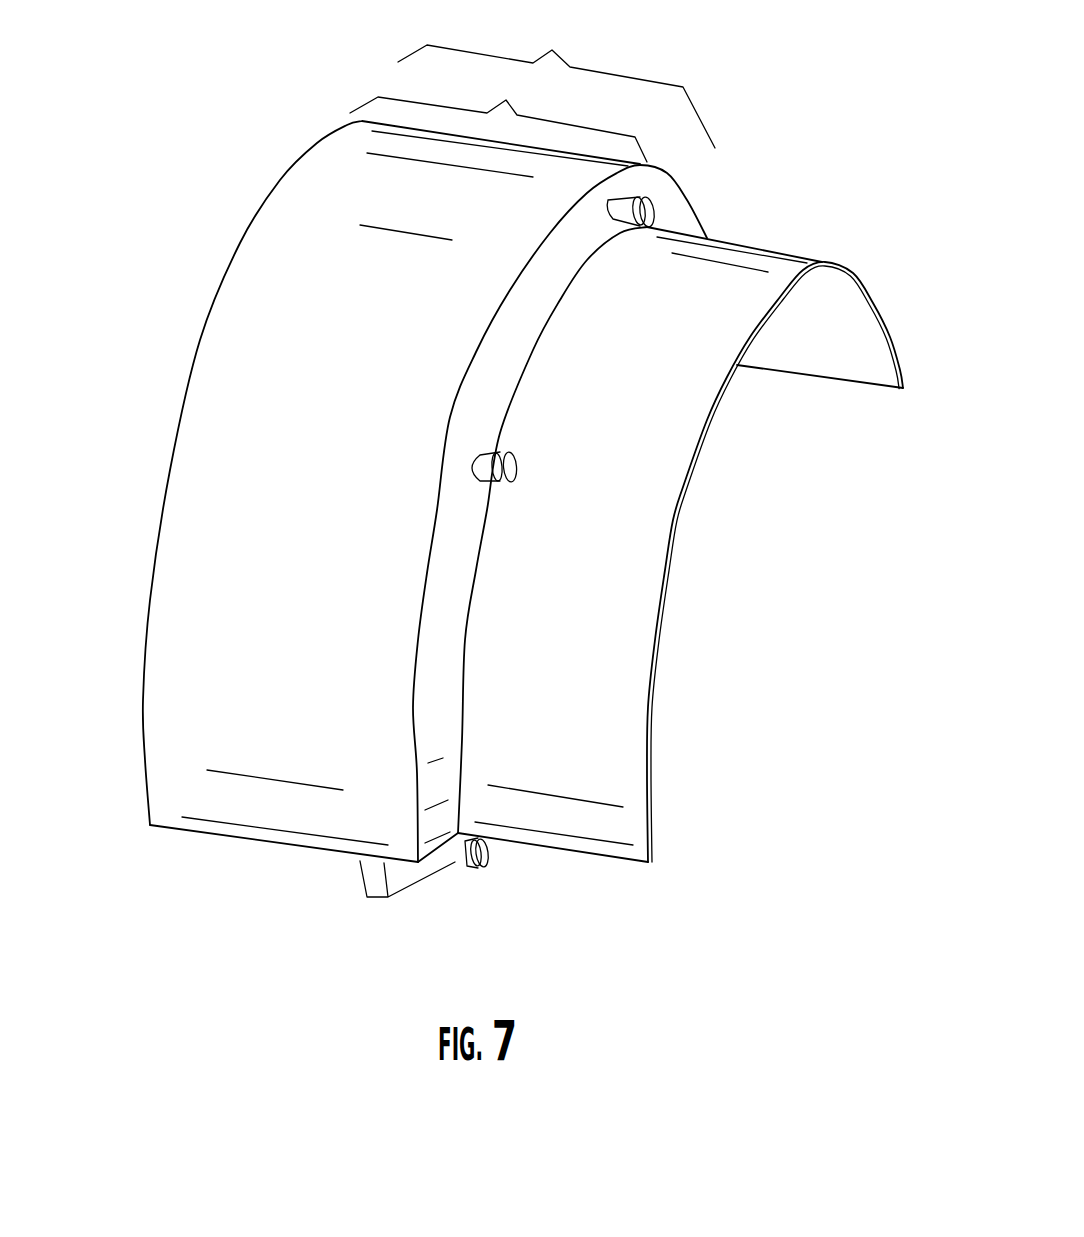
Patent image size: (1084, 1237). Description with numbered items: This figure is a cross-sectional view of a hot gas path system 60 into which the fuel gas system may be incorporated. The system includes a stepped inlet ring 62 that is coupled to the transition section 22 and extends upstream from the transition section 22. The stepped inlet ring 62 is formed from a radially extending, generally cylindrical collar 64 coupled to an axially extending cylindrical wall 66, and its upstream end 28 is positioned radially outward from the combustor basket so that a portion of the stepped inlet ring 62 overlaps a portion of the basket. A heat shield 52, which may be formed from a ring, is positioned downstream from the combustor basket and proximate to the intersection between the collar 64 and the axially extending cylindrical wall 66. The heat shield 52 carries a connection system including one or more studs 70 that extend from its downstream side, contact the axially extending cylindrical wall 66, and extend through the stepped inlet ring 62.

The transition section 22 is at (813, 253).
The upstream end 28 is at (142, 622).
The heat shield 52 is at (380, 898).
The hot gas path system 60 is at (727, 128).
The stepped inlet ring 62 is at (556, 81).
The collar 64 is at (498, 112).
The axially extending cylindrical wall 66 is at (663, 173).
The studs 70 is at (626, 198).